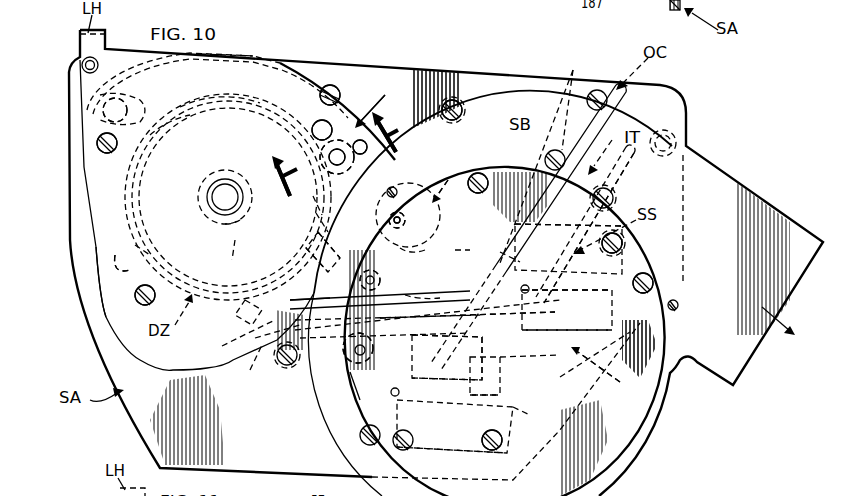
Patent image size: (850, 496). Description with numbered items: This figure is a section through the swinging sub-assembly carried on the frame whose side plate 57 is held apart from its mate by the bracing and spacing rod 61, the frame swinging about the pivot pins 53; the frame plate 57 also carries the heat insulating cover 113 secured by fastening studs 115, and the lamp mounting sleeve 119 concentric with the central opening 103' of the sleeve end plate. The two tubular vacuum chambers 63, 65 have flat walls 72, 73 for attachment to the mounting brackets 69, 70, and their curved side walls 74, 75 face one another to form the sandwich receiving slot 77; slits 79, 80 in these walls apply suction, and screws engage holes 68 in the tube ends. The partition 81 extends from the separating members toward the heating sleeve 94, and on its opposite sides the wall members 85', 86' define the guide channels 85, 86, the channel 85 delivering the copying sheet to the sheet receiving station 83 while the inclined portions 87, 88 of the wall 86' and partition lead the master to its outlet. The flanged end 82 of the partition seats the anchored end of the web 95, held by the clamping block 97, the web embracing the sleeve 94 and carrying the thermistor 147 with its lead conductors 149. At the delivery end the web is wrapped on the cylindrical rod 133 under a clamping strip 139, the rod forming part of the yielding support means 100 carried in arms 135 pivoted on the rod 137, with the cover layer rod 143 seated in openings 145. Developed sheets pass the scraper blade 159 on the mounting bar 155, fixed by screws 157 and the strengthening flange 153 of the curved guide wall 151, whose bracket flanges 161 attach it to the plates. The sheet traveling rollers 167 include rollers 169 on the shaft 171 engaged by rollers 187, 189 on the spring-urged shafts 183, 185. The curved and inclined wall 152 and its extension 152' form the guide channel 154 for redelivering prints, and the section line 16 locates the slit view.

The arms 135 is at (262, 62).
The fastening studs 115 is at (330, 85).
The frame plate 57 is at (358, 76).
The yielding support means 100 is at (385, 102).
The section line 16 is at (337, 153).
The bracing and spacing rod 61 is at (465, 100).
The bracket flanges 161 is at (571, 101).
The pivot pins 53 is at (678, 140).
The rod 137 is at (122, 110).
The web 95 is at (192, 105).
The sleeve 94 is at (156, 132).
The rod 143 is at (290, 130).
The openings 145 is at (300, 147).
The clamping strip 139 is at (392, 152).
The cylindrical rod 133 is at (365, 173).
The sheet traveling rollers 167 is at (482, 177).
The rollers 187 is at (435, 180).
The shaft 183 is at (405, 222).
The curved guide wall 151 is at (462, 250).
The guide channel 154 is at (500, 252).
The curved and inclined wall 152 is at (557, 229).
The extension 152' is at (608, 228).
The mounting bracket 69 is at (636, 246).
The scraper blade 159 is at (313, 196).
The fastening screws 157 is at (316, 213).
The mounting bar 155 is at (318, 238).
The strengthening flange 153 is at (292, 252).
The shaft 171 is at (397, 229).
The rollers 169 is at (418, 246).
The tubular sleeves 119 is at (212, 202).
The lead conductors 149 is at (118, 255).
The thermistor 147 is at (150, 250).
The central openings 103' is at (226, 248).
The sheet receiving station 83 is at (330, 270).
The wall member 85' is at (397, 279).
The guide channel 85 is at (432, 288).
The holes 68 is at (522, 292).
The flat wall 72 is at (546, 284).
The slits 79 is at (512, 318).
The curved side wall 74 is at (566, 317).
The vacuum chamber 63 is at (621, 320).
The heat insulating covers 113 is at (118, 286).
The clamping block 97 is at (245, 312).
The inclined portion 87 is at (222, 346).
The flanged end 82 is at (276, 364).
The wall member 86' is at (291, 368).
The shaft 185 is at (352, 374).
The partition 81 is at (447, 353).
The guide channel 86 is at (467, 358).
The slits 80 is at (485, 381).
The curved side wall 75 is at (540, 358).
The inclined portion 88 is at (250, 370).
The flat wall 73 is at (448, 397).
The rollers 189 is at (360, 400).
The sandwich receiving slot 77 is at (605, 374).
The vacuum chamber 65 is at (530, 415).
The mounting bracket 70 is at (435, 452).